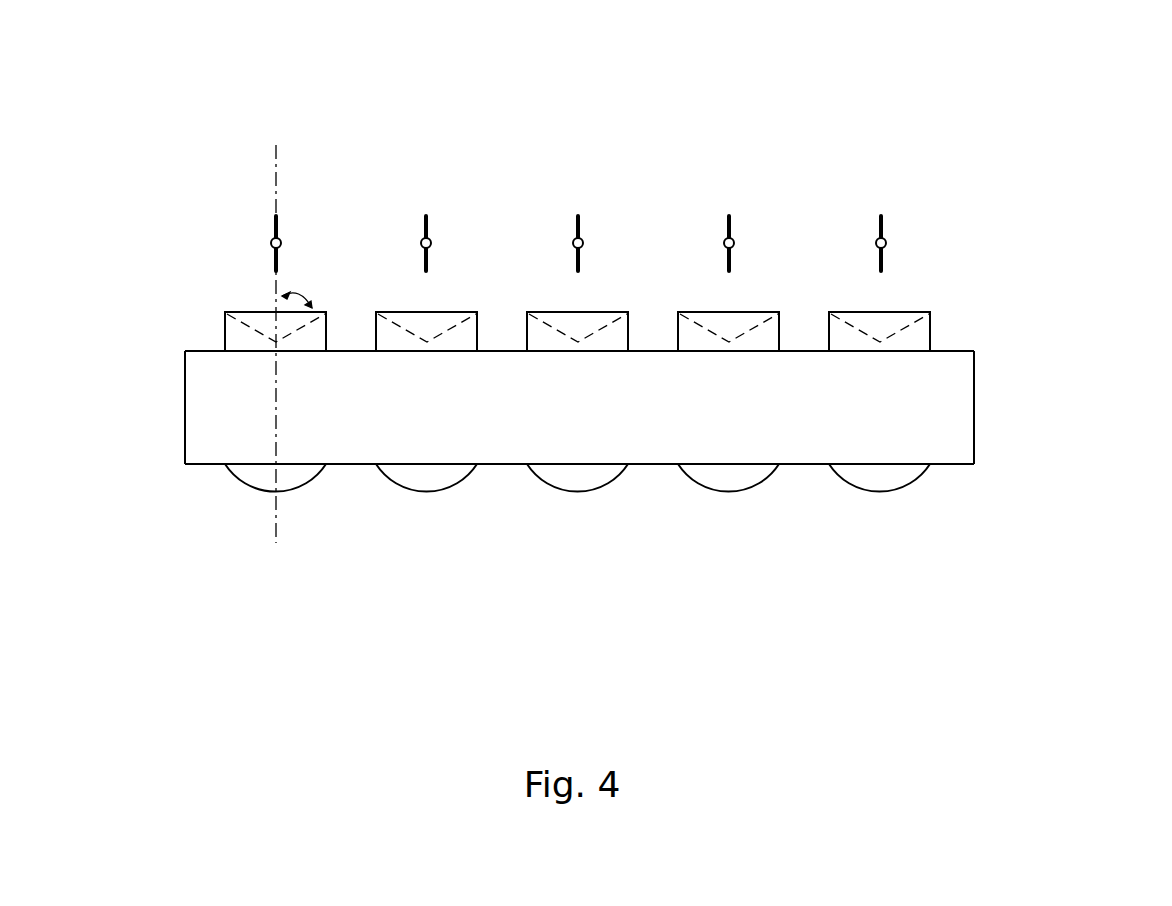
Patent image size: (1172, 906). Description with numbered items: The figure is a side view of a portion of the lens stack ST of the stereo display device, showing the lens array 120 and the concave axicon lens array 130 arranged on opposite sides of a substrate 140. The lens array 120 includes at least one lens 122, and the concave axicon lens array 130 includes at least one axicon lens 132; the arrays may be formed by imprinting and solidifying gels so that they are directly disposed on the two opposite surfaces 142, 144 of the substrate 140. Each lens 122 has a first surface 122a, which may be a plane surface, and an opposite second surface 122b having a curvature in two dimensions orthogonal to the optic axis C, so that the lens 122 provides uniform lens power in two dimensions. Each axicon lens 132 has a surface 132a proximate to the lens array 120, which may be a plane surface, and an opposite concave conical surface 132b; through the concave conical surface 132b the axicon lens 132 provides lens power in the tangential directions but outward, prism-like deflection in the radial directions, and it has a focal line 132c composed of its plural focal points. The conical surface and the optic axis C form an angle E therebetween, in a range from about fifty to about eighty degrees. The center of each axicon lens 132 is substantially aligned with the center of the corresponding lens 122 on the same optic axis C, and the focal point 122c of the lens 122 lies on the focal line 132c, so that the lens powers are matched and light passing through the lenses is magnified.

The lens stack ST is at (86, 62).
The lens array 120 is at (659, 528).
The lens 122 is at (659, 500).
The first surface 122a is at (913, 463).
The second surface 122b is at (902, 490).
The focal point 122c is at (273, 245).
The concave axicon lens array 130 is at (659, 241).
The axicon lens 132 is at (659, 272).
The surface 132a is at (898, 352).
The concave conical surface 132b is at (908, 327).
The focal line 132c is at (273, 220).
The substrate 140 is at (522, 408).
The surface 142 is at (203, 465).
The surface 144 is at (200, 349).
The optic axis C is at (277, 503).
The angle E is at (301, 290).